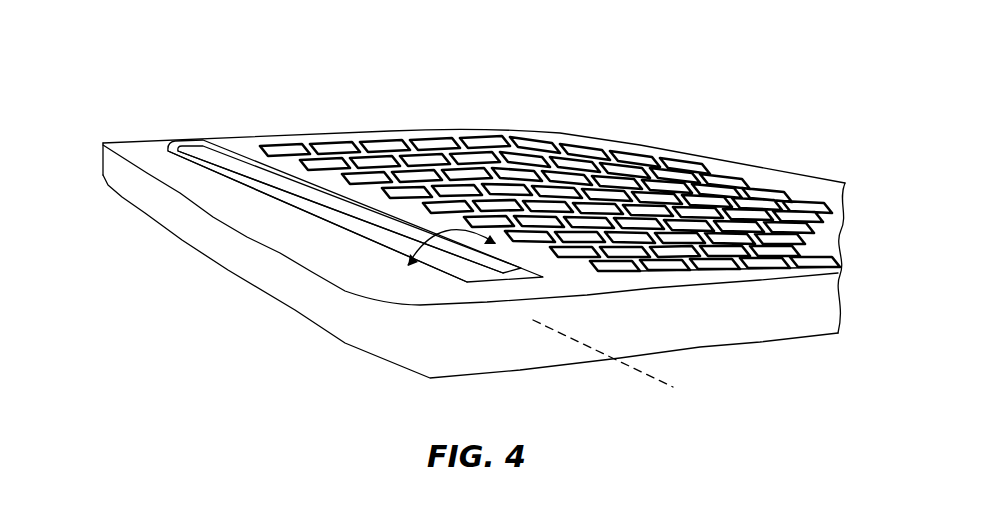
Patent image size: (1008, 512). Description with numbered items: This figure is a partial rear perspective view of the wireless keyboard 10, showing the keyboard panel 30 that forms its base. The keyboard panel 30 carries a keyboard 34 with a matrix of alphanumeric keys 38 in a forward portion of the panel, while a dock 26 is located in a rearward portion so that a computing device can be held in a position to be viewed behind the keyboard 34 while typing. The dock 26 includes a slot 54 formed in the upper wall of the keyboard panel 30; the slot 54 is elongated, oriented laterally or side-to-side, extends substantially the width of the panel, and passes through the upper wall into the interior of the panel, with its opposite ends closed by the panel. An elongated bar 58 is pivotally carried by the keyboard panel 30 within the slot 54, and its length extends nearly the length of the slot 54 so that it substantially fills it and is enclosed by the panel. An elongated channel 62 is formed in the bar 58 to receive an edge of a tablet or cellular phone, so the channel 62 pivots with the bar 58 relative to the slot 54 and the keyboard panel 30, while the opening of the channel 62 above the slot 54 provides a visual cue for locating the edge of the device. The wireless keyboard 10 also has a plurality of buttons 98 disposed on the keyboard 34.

The wireless keyboard 10 is at (398, 95).
The dock 26 is at (316, 224).
The keyboard panel 30 is at (797, 303).
The keyboard 34 is at (550, 247).
The alphanumeric keys 38 is at (618, 163).
The slot 54 is at (210, 167).
The elongated bar 58 is at (257, 185).
The elongated channel 62 is at (357, 218).
The buttons 98 is at (598, 262).